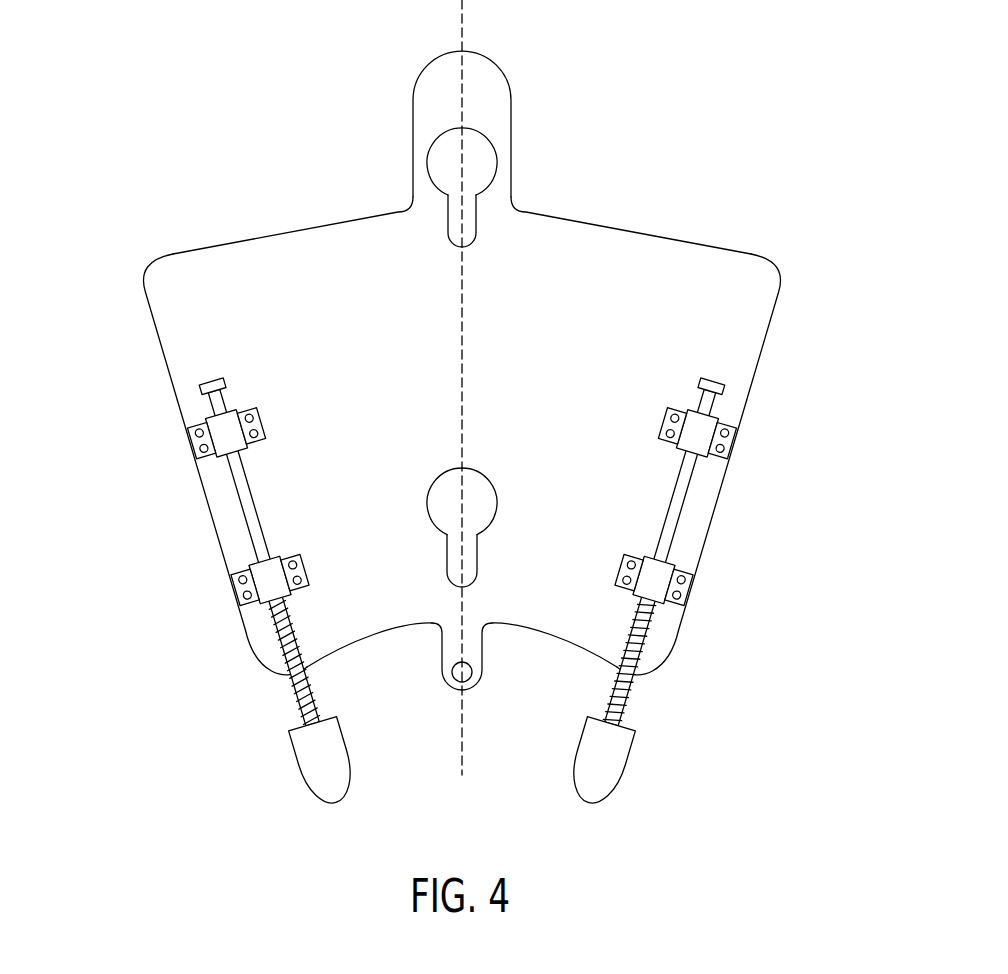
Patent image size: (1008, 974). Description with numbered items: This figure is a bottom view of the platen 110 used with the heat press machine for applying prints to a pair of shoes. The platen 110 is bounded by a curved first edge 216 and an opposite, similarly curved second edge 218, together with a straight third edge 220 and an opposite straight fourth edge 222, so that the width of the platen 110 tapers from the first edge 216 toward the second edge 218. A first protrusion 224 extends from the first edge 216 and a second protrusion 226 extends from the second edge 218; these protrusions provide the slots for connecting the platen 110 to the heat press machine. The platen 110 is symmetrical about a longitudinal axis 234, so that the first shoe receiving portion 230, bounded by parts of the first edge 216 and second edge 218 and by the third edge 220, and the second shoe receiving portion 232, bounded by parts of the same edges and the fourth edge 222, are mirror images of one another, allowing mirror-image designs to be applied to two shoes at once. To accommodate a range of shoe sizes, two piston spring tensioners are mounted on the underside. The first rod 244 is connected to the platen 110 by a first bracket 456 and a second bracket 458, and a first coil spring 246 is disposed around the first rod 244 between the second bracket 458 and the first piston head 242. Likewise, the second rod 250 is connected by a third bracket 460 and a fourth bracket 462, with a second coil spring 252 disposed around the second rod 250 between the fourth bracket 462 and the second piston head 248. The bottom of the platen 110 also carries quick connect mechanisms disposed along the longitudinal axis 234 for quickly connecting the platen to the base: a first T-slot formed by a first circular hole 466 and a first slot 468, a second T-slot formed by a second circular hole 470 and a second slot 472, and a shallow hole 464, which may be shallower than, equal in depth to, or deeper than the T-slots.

The platen 110 is at (722, 200).
The first edge 216 is at (552, 215).
The second edge 218 is at (533, 638).
The third edge 220 is at (758, 368).
The fourth edge 222 is at (172, 377).
The first protrusion 224 is at (497, 60).
The second protrusion 226 is at (449, 688).
The first shoe receiving portion 230 is at (747, 332).
The second shoe receiving portion 232 is at (177, 339).
The longitudinal axis 234 is at (462, 28).
The first piston head 242 is at (613, 757).
The first rod 244 is at (676, 520).
The first coil spring 246 is at (632, 690).
The second piston head 248 is at (310, 757).
The second rod 250 is at (248, 516).
The second coil spring 252 is at (292, 690).
The first bracket 456 is at (705, 433).
The second bracket 458 is at (655, 576).
The third bracket 460 is at (218, 435).
The fourth bracket 462 is at (268, 576).
The shallow hole 464 is at (454, 672).
The first circular hole 466 is at (480, 157).
The first slot 468 is at (448, 232).
The second circular hole 470 is at (483, 495).
The second slot 472 is at (448, 570).